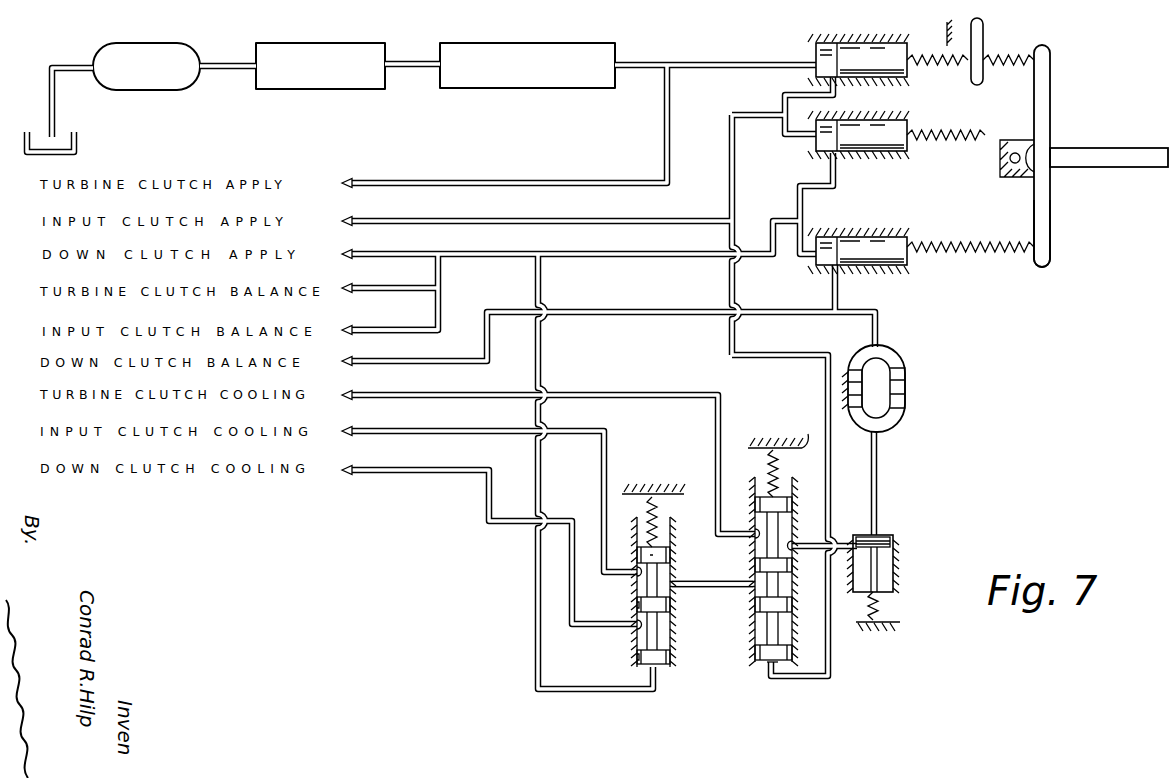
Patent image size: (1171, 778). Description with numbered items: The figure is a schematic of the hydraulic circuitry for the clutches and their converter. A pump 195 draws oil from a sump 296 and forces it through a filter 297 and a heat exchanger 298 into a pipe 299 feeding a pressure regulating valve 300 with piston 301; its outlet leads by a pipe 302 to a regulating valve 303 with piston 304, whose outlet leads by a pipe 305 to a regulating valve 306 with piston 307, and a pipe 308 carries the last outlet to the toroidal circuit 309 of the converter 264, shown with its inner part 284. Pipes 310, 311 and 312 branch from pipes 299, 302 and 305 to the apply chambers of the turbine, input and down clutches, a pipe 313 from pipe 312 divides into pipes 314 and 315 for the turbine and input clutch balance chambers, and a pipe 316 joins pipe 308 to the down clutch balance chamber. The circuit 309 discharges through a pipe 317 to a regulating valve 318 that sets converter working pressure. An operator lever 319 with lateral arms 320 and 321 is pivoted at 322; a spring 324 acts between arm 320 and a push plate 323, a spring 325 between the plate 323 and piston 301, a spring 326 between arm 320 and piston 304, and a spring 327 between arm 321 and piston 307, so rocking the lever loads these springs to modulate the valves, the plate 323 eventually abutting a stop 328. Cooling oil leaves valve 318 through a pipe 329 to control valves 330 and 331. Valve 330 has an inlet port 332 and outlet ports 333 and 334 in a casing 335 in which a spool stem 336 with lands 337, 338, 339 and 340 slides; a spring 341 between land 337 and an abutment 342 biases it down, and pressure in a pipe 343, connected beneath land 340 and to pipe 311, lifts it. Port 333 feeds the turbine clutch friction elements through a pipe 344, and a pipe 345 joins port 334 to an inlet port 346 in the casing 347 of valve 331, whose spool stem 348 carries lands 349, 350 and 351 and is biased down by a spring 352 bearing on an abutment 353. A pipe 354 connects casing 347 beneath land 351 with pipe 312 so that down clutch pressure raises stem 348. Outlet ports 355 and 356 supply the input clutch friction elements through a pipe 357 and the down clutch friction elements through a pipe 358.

The pump 195 is at (158, 92).
The sump 296 is at (77, 143).
The filter 297 is at (296, 92).
The heat exchanger 298 is at (480, 89).
The pipe 299 is at (694, 59).
The pressure regulating valve 300 is at (863, 33).
The piston 301 is at (884, 69).
The pipe 302 is at (783, 99).
The pressure regulating valve 303 is at (909, 108).
The piston 304 is at (884, 144).
The pipe 305 is at (841, 186).
The pressure regulating valve 306 is at (894, 227).
The piston 307 is at (884, 259).
The pipe 308 is at (841, 300).
The toroidal circuit 309 is at (890, 348).
The converter 264 is at (910, 361).
The solenoid winding 284 is at (895, 376).
The pipe 310 is at (547, 178).
The pipe 311 is at (577, 217).
The pipe 312 is at (584, 251).
The pipe 313 is at (442, 274).
The pipe 314 is at (400, 291).
The pipe 315 is at (389, 332).
The pipe 316 is at (614, 309).
The pipe 317 is at (881, 471).
The pressure regulating valve 318 is at (903, 550).
The operator controlled lever 319 is at (1108, 160).
The arm 320 is at (1051, 86).
The arm 321 is at (1051, 236).
The pivot 322 is at (1013, 178).
The push plate 323 is at (984, 32).
The spring 324 is at (996, 69).
The spring 325 is at (933, 69).
The spring 326 is at (952, 133).
The spring 327 is at (965, 258).
The stop 328 is at (933, 33).
The pipe 329 is at (839, 540).
The control valve 330 is at (751, 693).
The control valve 331 is at (665, 689).
The inlet port 332 is at (793, 541).
The outlet port 333 is at (754, 532).
The outlet port 334 is at (712, 576).
The casing 335 is at (781, 665).
The valve stem 336 is at (760, 647).
The land 337 is at (755, 496).
The land 338 is at (793, 572).
The land 339 is at (793, 610).
The land 340 is at (800, 645).
The spring 341 is at (769, 461).
The abutment 342 is at (807, 434).
The pipe 343 is at (832, 667).
The pipe 344 is at (716, 433).
The pipe 345 is at (730, 589).
The inlet port 346 is at (675, 571).
The casing 347 is at (640, 668).
The valve stem 348 is at (660, 636).
The land 349 is at (672, 543).
The land 350 is at (633, 607).
The land 351 is at (633, 658).
The spring 352 is at (657, 518).
The abutment 353 is at (653, 479).
The pipe 354 is at (531, 596).
The outlet port 355 is at (633, 581).
The outlet port 356 is at (634, 626).
The pipe 357 is at (601, 469).
The pipe 358 is at (568, 551).